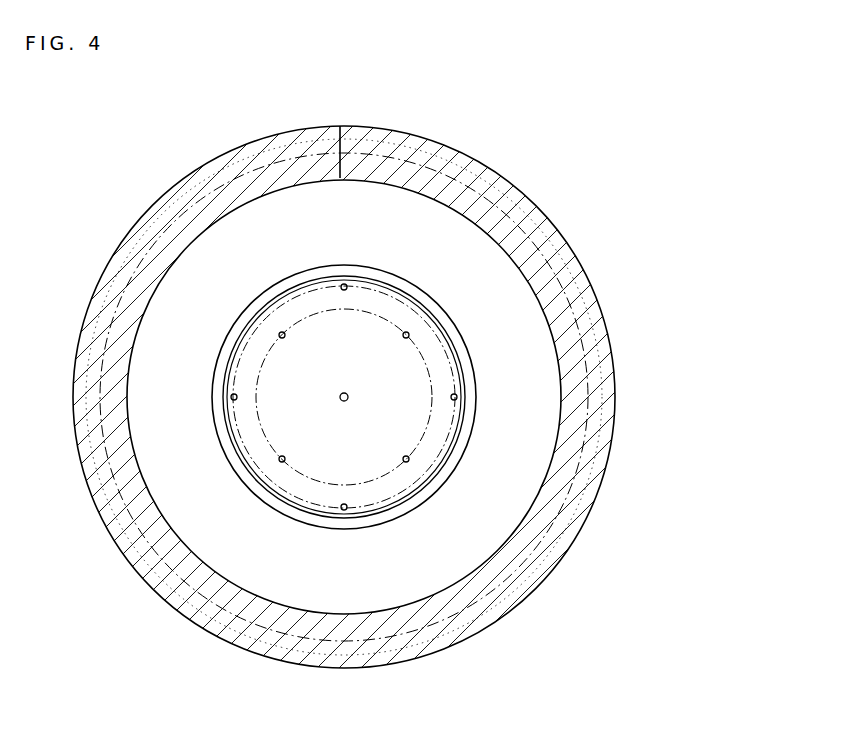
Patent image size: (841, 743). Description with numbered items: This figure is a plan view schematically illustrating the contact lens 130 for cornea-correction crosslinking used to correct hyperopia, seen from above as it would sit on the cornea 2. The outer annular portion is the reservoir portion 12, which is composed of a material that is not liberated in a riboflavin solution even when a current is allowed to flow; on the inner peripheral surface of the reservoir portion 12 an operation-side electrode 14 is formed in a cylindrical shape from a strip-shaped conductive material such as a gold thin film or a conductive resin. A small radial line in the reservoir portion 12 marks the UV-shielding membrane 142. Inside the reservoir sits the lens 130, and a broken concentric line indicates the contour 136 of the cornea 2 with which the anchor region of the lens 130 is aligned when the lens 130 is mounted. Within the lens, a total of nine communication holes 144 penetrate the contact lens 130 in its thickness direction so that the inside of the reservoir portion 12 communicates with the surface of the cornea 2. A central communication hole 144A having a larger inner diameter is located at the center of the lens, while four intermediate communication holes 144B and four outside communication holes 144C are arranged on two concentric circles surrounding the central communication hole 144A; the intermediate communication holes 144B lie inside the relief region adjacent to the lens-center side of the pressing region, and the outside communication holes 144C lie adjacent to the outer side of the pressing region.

The cornea 2 is at (503, 278).
The reservoir portion 12 is at (364, 272).
The operation-side electrode 14 is at (311, 281).
The contact lens for correcting hyperopia 130 is at (471, 151).
The contour 136 is at (538, 203).
The UV-shielding membrane 142 is at (337, 151).
The communication holes 144 is at (523, 351).
The central communication hole 144A is at (347, 399).
The intermediate communication holes 144B is at (408, 335).
The outside communication holes 144C is at (476, 383).